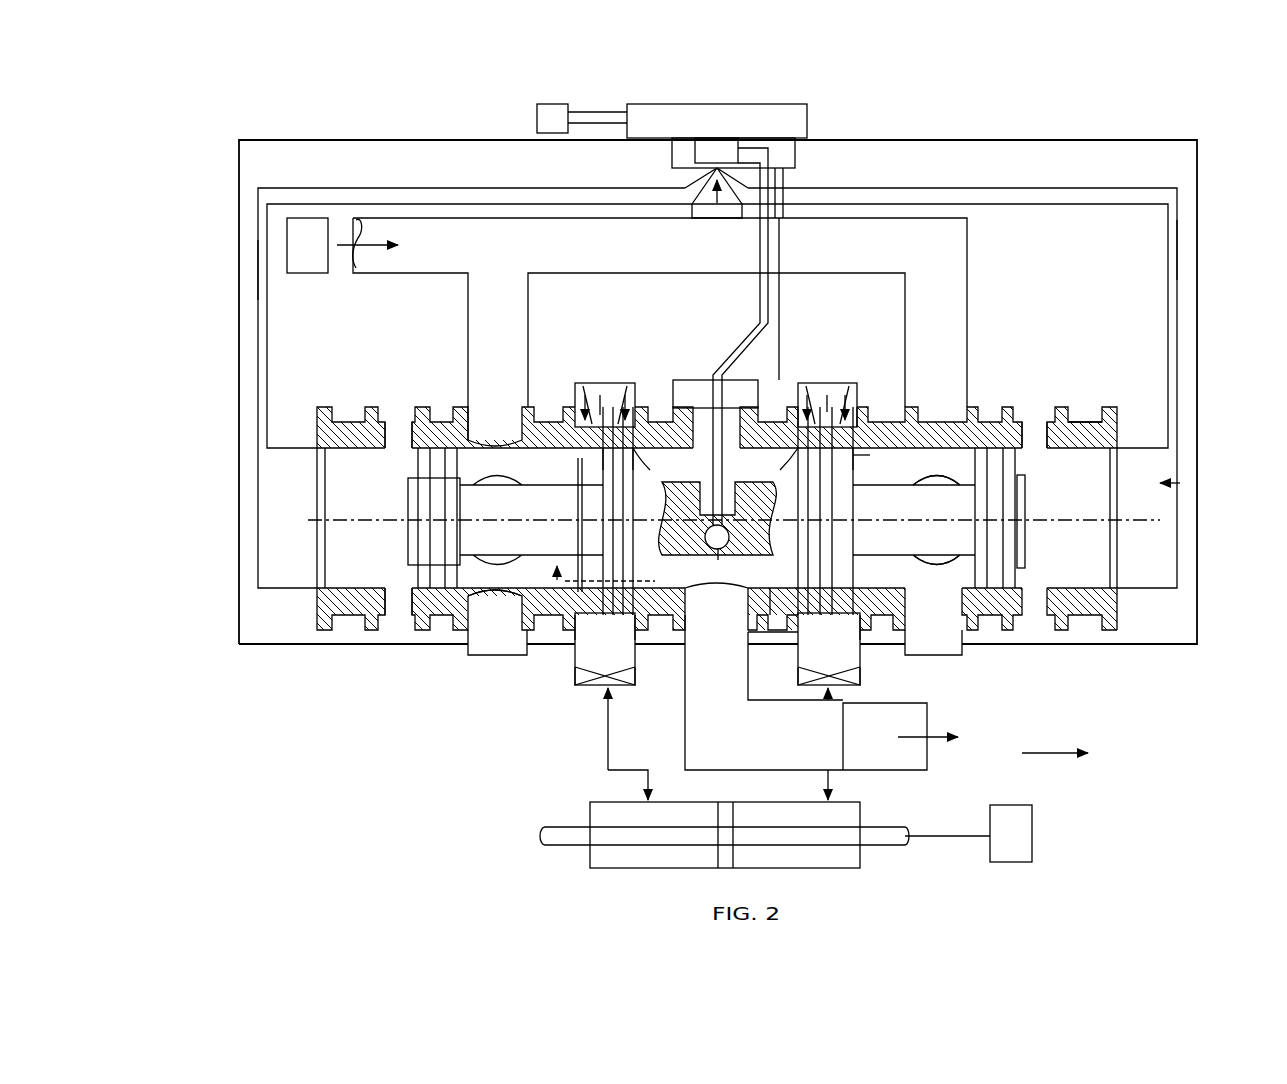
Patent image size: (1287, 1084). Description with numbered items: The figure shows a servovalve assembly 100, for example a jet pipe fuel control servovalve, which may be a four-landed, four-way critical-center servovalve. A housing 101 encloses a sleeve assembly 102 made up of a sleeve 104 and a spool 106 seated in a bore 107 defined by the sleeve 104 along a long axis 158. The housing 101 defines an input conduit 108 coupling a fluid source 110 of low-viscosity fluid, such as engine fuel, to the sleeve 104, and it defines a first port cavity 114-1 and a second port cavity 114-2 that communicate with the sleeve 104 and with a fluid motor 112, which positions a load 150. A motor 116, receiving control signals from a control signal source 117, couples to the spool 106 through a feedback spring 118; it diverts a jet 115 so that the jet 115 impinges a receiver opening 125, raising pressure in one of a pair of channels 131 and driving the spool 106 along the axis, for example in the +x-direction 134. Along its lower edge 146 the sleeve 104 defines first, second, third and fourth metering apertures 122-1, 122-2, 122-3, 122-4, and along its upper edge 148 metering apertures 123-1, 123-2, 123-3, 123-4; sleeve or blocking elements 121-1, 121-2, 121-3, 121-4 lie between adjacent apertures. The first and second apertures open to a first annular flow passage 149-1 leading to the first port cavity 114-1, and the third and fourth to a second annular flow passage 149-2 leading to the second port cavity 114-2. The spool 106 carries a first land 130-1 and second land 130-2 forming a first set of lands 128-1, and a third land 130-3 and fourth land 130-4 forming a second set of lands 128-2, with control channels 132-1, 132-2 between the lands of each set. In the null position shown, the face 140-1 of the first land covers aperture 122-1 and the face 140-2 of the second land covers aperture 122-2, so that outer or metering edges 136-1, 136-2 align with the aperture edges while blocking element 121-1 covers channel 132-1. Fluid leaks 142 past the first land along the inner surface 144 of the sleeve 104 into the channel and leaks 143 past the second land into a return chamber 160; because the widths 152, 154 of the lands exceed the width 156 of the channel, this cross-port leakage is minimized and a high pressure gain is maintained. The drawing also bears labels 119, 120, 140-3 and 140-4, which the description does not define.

The servovalve assembly 100 is at (316, 752).
The housing 101 is at (1197, 160).
The sleeve assembly 102 is at (1097, 308).
The sleeve 104 is at (1062, 407).
The spool 106 is at (1027, 497).
The bore 107 is at (1178, 483).
The input conduit 108 is at (967, 223).
The fluid source 110 is at (287, 245).
The fluid motor 112 is at (860, 866).
The first port cavity 114-1 is at (632, 688).
The second port cavity 114-2 is at (843, 770).
The jet 115 is at (698, 150).
The motor 116 is at (807, 120).
The control signal source 117 is at (537, 118).
The feedback spring 118 is at (770, 296).
The nozzle 119 is at (690, 182).
The pilot chamber 120 is at (775, 405).
The first sleeve element 121-1 is at (595, 605).
The second sleeve element 121-2 is at (872, 605).
The third sleeve element 121-3 is at (585, 418).
The fourth sleeve element 121-4 is at (808, 418).
The first metering aperture 122-1 is at (578, 605).
The second metering aperture 122-2 is at (645, 603).
The third metering aperture 122-3 is at (862, 605).
The fourth metering aperture 122-4 is at (783, 605).
The first metering aperture 123-1 is at (625, 418).
The second metering aperture 123-2 is at (643, 460).
The third metering aperture 123-3 is at (868, 420).
The fourth metering aperture 123-4 is at (845, 418).
The receiver opening 125 is at (717, 207).
The first set of lands 128-1 is at (552, 457).
The second set of lands 128-2 is at (870, 455).
The first land 130-1 is at (540, 460).
The second land 130-2 is at (628, 450).
The third land 130-3 is at (898, 465).
The fourth land 130-4 is at (808, 450).
The pair of channels 131 is at (1180, 240).
The control channel 132-1 is at (605, 445).
The control channel 132-2 is at (875, 440).
The +x-direction 134 is at (1048, 756).
The outer edge of the first land 136-1 is at (575, 560).
The outer edge of the second land 136-2 is at (718, 561).
The face of the first land 140-1 is at (588, 605).
The face of the second land 140-2 is at (620, 632).
The third land 140-3 is at (850, 548).
The fourth land 140-4 is at (850, 490).
The fluid leak 142 is at (583, 533).
The fluid leak 143 is at (592, 498).
The inner surface of the sleeve 144 is at (330, 452).
The lower edge of the sleeve 146 is at (1088, 628).
The upper edge of the sleeve 148 is at (1087, 416).
The first annular flow passage 149-1 is at (618, 393).
The second annular flow passage 149-2 is at (827, 400).
The load 150 is at (1032, 820).
The width of the first land 152 is at (575, 492).
The width of the second land 154 is at (645, 572).
The width of the channel 156 is at (640, 503).
The long axis 158 is at (312, 518).
The return chamber 160 is at (715, 394).